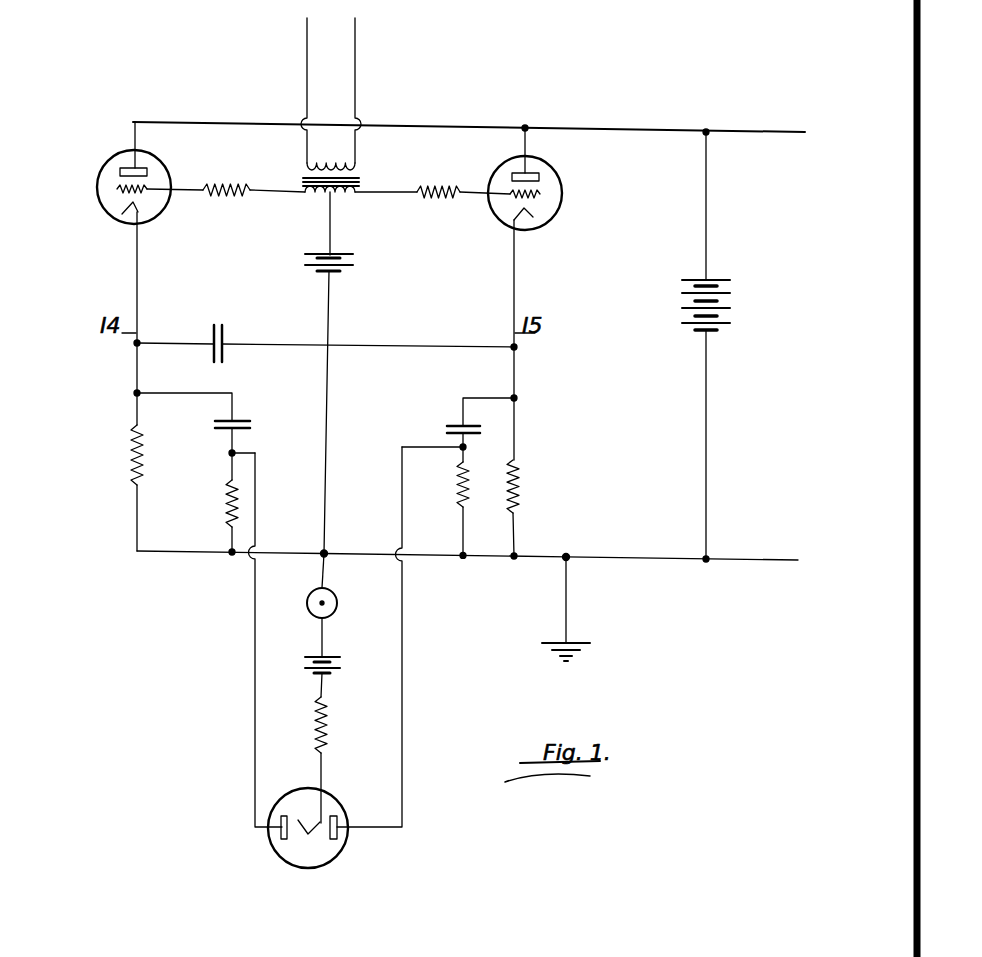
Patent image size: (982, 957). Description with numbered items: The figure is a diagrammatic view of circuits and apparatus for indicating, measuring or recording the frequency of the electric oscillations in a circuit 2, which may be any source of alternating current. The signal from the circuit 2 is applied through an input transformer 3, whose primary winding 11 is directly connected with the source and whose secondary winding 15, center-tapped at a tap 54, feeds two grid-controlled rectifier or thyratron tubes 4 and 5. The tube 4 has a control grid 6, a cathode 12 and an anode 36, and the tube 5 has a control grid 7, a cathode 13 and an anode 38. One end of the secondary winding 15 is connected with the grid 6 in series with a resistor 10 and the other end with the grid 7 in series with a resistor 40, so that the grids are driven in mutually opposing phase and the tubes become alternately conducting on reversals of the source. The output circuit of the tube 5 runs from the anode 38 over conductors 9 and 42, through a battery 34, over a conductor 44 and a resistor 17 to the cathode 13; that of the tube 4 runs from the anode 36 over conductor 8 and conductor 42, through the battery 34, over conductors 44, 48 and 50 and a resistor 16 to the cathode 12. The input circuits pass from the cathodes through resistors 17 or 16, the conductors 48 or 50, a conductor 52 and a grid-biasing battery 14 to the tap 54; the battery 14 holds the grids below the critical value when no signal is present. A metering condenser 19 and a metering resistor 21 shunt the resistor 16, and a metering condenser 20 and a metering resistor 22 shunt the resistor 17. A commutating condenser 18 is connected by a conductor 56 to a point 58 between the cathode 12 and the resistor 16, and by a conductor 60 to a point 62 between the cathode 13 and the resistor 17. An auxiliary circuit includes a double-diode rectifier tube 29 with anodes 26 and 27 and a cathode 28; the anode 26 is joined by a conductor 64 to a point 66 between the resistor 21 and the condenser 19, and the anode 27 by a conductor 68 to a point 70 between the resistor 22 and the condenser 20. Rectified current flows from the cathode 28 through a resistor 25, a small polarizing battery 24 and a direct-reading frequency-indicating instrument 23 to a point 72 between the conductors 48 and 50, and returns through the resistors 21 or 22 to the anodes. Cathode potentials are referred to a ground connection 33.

The circuit 2 is at (355, 50).
The input transformer 3 is at (359, 183).
The tube 4 is at (125, 172).
The tube 5 is at (545, 179).
The control grid 6 is at (110, 200).
The control grid 7 is at (541, 193).
The conductor 8 is at (132, 127).
The conductor 9 is at (530, 142).
The resistor 10 is at (226, 184).
The primary winding 11 is at (335, 168).
The cathode or filament 12 is at (146, 208).
The cathode or filament 13 is at (530, 212).
The grid-biasing battery 14 is at (350, 257).
The secondary winding 15 is at (300, 200).
The resistor 16 is at (128, 455).
The resistor 17 is at (520, 478).
The commutating condenser 18 is at (224, 345).
The metering condenser 19 is at (248, 428).
The metering condenser 20 is at (455, 425).
The metering resistor 21 is at (226, 500).
The metering resistor 22 is at (466, 494).
The frequency-indicating instrument 23 is at (338, 601).
The polarizing battery 24 is at (334, 657).
The resistor 25 is at (330, 724).
The anode 26 is at (280, 838).
The anode 27 is at (340, 840).
The cathode 28 is at (323, 815).
The double-diode rectifier tube 29 is at (311, 831).
The ground connection 33 is at (575, 645).
The battery 34 is at (715, 278).
The anode or plate 36 is at (120, 170).
The anode or plate 38 is at (540, 172).
The resistor 40 is at (437, 185).
The conductor 42 is at (550, 128).
The conductor 44 is at (590, 558).
The conductor 48 is at (369, 555).
The conductor 50 is at (282, 552).
The conductor 52 is at (327, 424).
The tap 54 is at (334, 200).
The conductor 56 is at (158, 345).
The point 58 is at (130, 348).
The conductor 60 is at (280, 349).
The point 62 is at (520, 348).
The conductor 64 is at (255, 606).
The point 66 is at (228, 454).
The conductor 68 is at (403, 763).
The point 70 is at (467, 447).
The point 72 is at (327, 552).